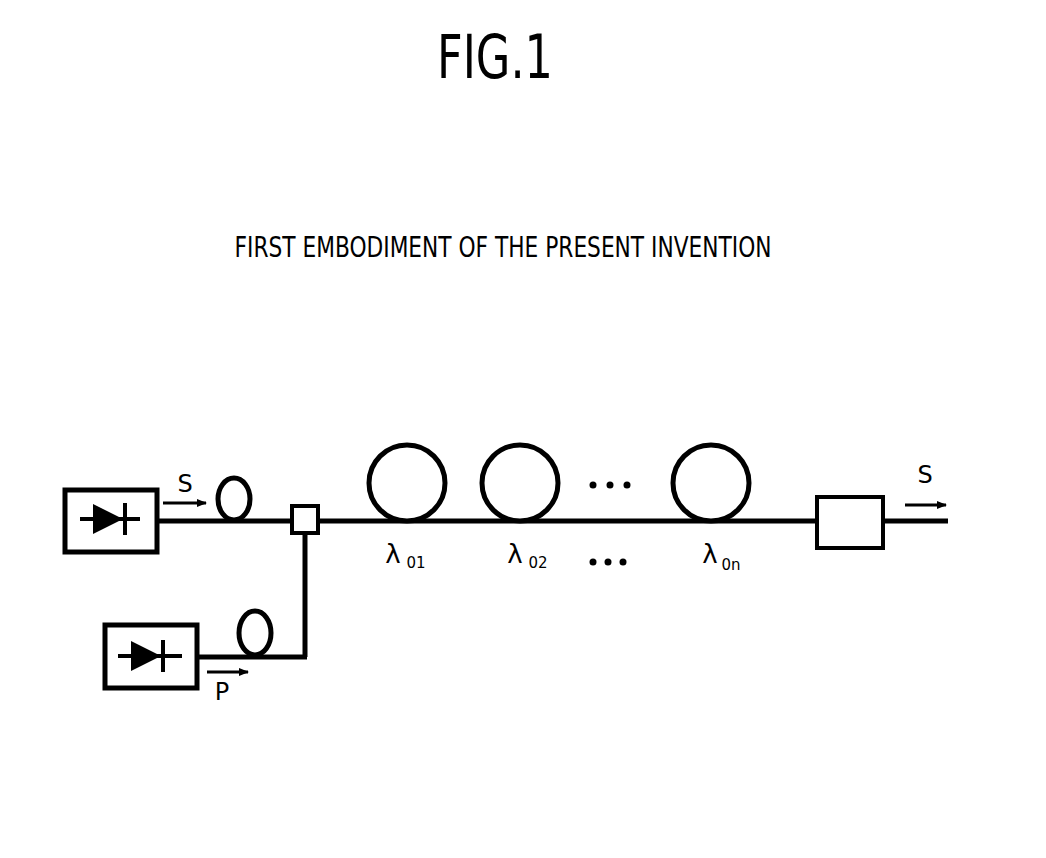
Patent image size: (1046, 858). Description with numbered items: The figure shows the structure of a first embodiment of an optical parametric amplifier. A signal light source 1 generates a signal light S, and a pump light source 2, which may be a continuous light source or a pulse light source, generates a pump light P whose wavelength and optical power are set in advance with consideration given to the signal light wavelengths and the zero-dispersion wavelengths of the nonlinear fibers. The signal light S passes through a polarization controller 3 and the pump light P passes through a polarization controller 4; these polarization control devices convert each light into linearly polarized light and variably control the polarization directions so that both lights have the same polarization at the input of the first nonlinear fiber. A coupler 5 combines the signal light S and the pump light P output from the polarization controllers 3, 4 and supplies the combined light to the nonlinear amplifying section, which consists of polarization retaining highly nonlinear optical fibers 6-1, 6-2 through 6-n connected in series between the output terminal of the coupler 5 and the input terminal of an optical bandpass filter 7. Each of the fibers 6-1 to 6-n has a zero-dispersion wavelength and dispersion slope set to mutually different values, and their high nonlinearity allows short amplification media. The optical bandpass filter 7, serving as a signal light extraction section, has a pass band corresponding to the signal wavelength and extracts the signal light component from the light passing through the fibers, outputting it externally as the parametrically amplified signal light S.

The signal light source 1 is at (107, 490).
The pump light source 2 is at (150, 625).
The polarization controller 3 is at (231, 478).
The polarization controller 4 is at (254, 611).
The coupler 5 is at (305, 506).
The polarization retaining highly nonlinear optical fiber (HNLF) 6-1 is at (400, 447).
The polarization retaining highly nonlinear optical fiber (HNLF) 6-2 is at (514, 447).
The polarization retaining highly nonlinear optical fiber (HNLF) 6-n is at (706, 447).
The optical bandpass filter 7 is at (850, 497).